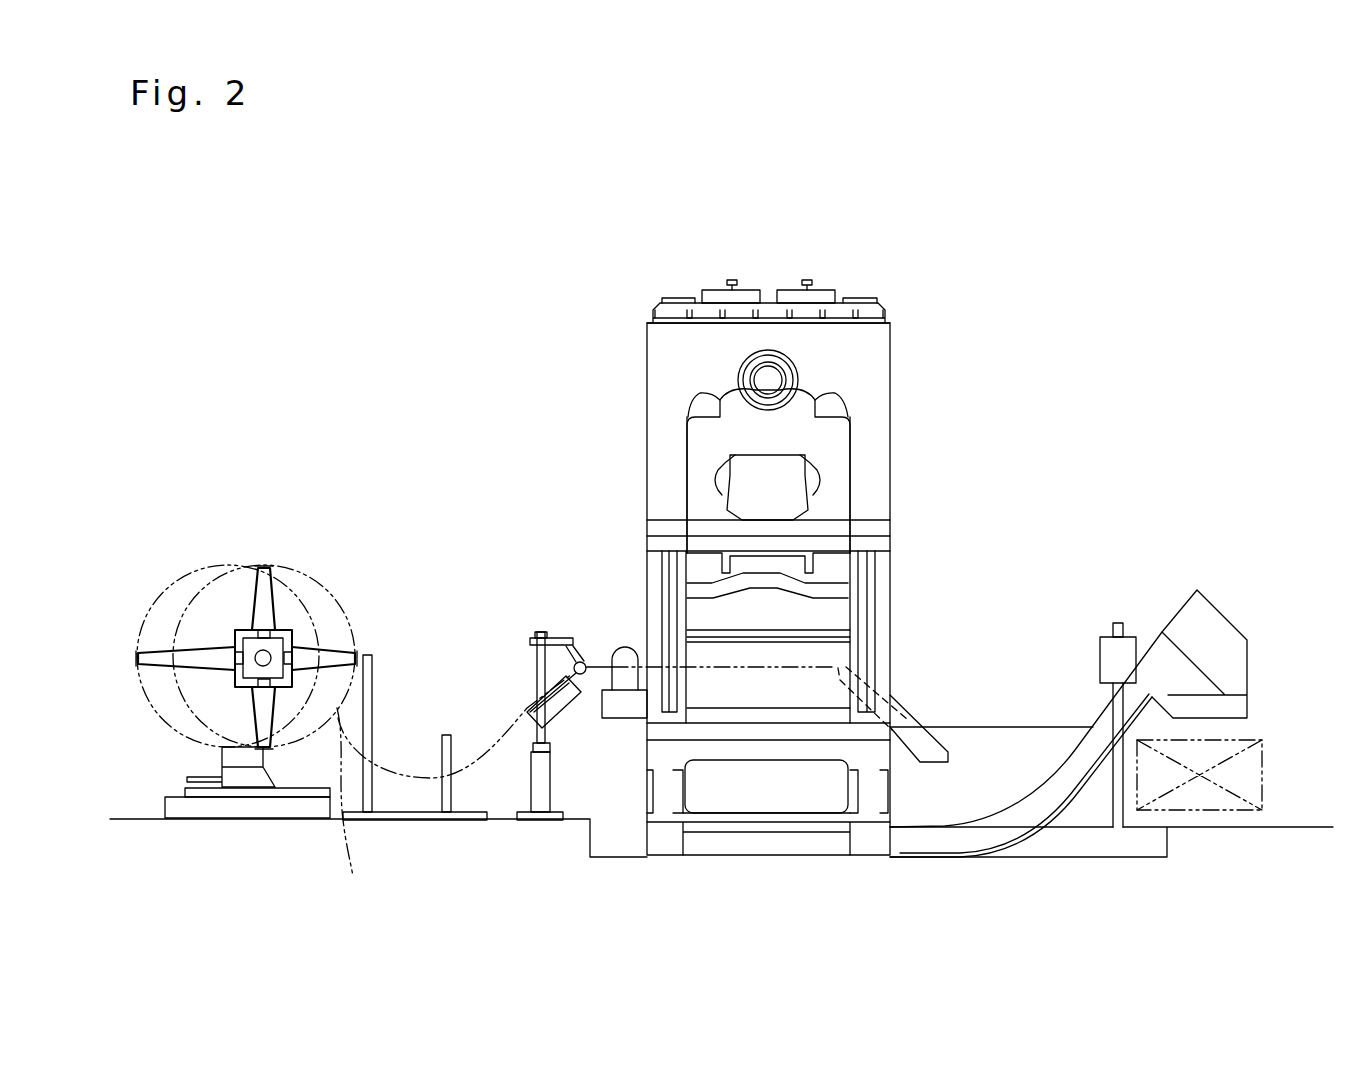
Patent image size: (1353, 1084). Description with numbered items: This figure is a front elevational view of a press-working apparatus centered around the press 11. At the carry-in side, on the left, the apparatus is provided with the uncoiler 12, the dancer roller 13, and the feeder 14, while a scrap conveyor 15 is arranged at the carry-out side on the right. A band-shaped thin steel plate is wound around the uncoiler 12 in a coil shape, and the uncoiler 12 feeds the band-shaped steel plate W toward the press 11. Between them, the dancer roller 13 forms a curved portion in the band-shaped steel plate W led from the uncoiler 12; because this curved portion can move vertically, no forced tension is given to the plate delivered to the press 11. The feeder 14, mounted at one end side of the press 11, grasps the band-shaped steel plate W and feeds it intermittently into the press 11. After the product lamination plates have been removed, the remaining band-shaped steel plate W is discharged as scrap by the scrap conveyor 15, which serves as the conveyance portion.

The press 11 is at (885, 286).
The uncoiler 12 is at (263, 532).
The dancer roller 13 is at (447, 716).
The feeder 14 is at (614, 634).
The scrap conveyor 15 is at (1091, 716).
The band-shaped steel plate W is at (454, 792).